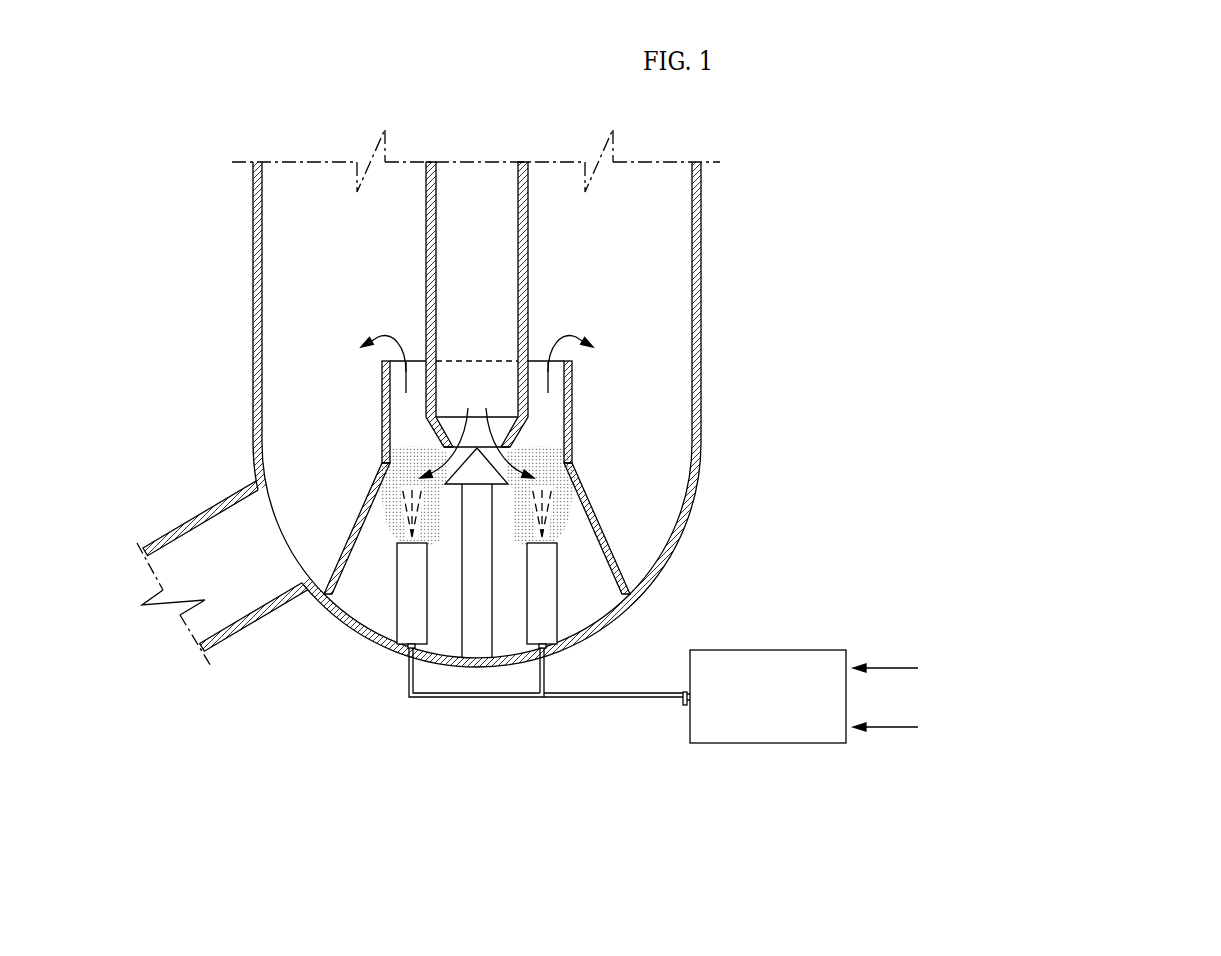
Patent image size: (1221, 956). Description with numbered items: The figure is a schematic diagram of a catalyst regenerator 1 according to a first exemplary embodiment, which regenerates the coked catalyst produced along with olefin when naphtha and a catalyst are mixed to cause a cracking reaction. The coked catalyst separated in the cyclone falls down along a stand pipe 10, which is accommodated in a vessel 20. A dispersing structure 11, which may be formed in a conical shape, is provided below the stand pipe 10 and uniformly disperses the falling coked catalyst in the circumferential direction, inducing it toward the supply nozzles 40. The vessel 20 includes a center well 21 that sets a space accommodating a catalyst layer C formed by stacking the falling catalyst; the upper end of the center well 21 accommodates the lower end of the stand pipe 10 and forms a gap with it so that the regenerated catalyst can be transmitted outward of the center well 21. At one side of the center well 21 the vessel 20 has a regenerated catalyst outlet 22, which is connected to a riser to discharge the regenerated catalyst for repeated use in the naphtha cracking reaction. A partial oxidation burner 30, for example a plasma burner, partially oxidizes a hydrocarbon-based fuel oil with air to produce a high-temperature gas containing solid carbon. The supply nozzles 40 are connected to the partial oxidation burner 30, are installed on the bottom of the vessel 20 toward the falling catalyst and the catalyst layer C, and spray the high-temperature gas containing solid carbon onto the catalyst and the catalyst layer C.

The catalyst regenerator 1 is at (483, 111).
The stand pipe 10 is at (528, 215).
The dispersing structure 11 is at (482, 467).
The vessel 20 is at (253, 281).
The center well 21 is at (383, 415).
The regenerated catalyst outlet 22 is at (173, 532).
The partial oxidation burner 30 is at (780, 650).
The supply nozzles 40 is at (402, 617).
The catalyst layer C is at (558, 487).